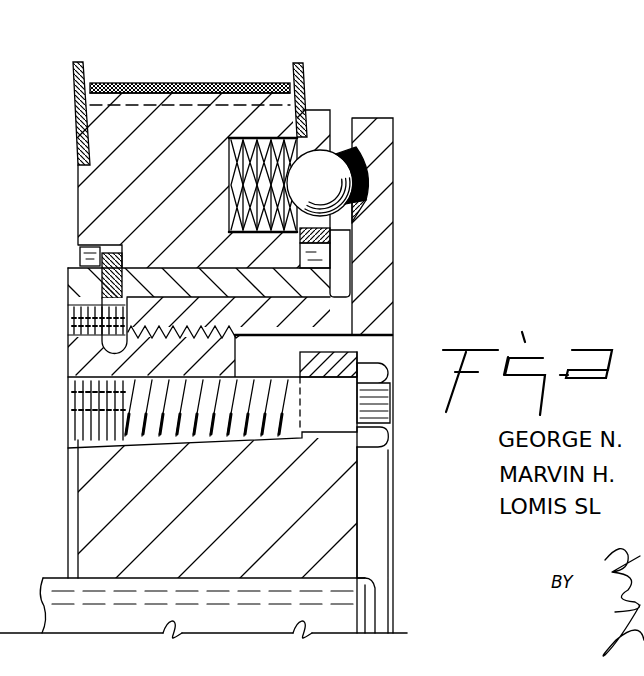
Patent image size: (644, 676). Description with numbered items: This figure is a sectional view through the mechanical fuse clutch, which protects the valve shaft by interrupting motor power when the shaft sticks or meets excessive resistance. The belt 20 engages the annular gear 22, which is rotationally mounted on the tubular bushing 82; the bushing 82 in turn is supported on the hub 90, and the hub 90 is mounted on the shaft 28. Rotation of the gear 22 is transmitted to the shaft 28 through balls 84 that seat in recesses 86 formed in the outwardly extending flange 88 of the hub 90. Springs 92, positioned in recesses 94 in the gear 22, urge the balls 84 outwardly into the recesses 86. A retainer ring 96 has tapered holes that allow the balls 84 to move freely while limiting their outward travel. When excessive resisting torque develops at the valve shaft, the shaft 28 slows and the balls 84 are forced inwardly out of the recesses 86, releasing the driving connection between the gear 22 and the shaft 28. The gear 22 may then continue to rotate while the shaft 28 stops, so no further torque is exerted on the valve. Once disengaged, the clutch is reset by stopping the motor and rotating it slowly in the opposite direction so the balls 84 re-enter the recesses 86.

The annular gear 22 is at (102, 175).
The belt 20 is at (220, 83).
The recesses 94 is at (272, 138).
The springs 92 is at (335, 155).
The balls 84 is at (343, 147).
The outwardly extending flange 88 is at (353, 152).
The recesses 86 is at (368, 176).
The retainer ring 96 is at (345, 235).
The tubular bushing 82 is at (332, 290).
The hub 90 is at (360, 487).
The shaft 28 is at (372, 583).